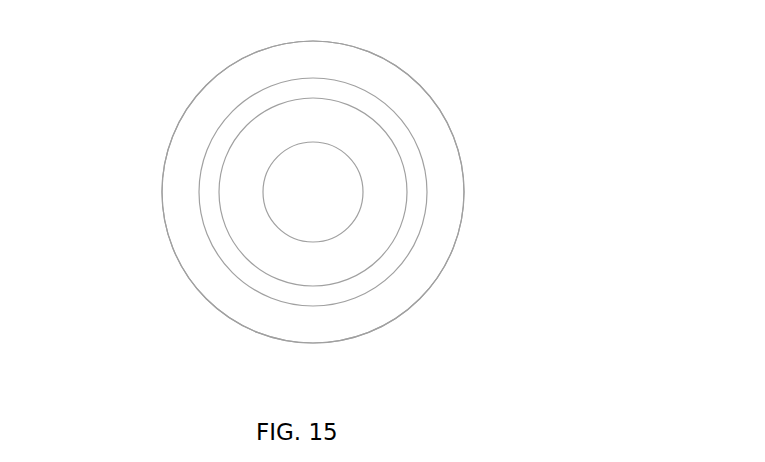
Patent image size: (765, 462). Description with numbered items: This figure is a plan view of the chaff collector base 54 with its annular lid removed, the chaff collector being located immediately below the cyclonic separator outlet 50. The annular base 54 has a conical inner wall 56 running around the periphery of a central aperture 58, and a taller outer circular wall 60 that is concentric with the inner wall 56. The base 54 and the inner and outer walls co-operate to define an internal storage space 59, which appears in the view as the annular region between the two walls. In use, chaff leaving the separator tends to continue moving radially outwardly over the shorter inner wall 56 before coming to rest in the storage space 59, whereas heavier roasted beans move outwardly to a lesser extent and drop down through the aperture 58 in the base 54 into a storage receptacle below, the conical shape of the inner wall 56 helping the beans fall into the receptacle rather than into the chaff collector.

The cyclonic separator outlet 50 is at (404, 41).
The annular base 54 is at (213, 102).
The internal storage space 59 is at (175, 168).
The outer circular wall 60 is at (160, 234).
The conical inner wall 56 is at (225, 252).
The central aperture 58 is at (337, 208).